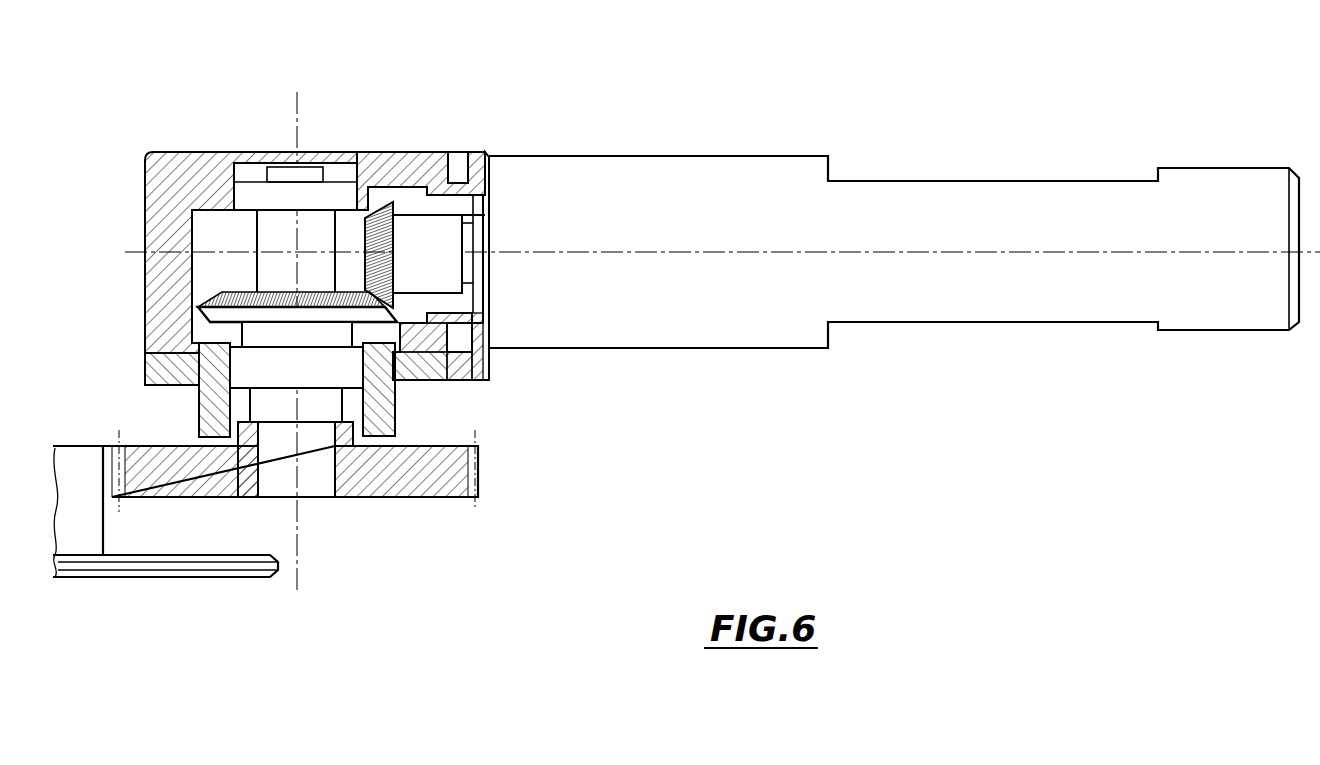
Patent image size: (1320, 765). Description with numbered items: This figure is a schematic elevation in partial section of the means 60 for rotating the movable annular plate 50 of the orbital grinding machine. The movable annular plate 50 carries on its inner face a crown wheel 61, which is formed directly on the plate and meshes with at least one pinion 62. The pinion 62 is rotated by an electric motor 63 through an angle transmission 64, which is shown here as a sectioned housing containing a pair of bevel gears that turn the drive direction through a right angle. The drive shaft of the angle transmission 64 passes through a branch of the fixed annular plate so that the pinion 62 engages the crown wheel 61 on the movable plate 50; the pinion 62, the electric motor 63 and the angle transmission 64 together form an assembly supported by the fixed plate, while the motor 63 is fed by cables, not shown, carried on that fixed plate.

The movable annular plate 50 is at (93, 593).
The means for rotational actuation 60 is at (110, 430).
The crown wheel 61 is at (105, 443).
The pinion 62 is at (412, 477).
The electric motor 63 is at (680, 169).
The angle transmission 64 is at (397, 152).